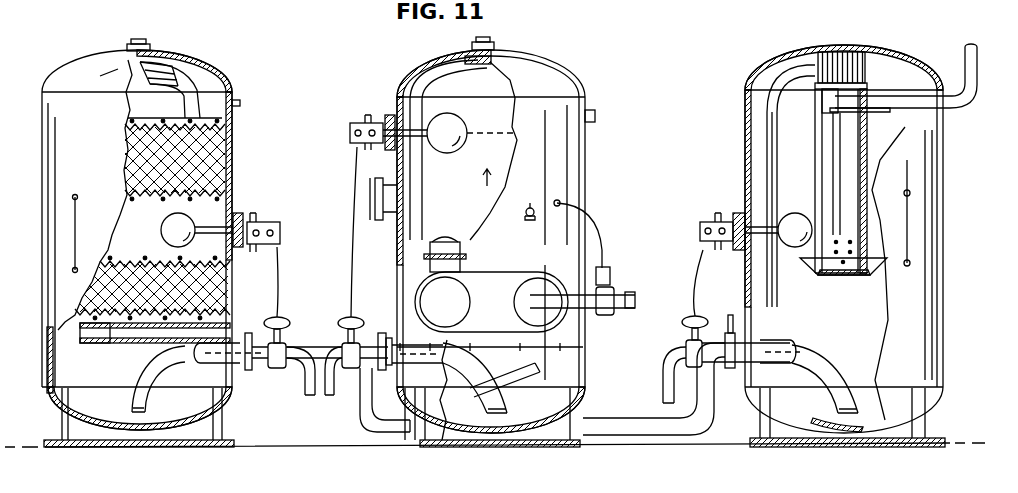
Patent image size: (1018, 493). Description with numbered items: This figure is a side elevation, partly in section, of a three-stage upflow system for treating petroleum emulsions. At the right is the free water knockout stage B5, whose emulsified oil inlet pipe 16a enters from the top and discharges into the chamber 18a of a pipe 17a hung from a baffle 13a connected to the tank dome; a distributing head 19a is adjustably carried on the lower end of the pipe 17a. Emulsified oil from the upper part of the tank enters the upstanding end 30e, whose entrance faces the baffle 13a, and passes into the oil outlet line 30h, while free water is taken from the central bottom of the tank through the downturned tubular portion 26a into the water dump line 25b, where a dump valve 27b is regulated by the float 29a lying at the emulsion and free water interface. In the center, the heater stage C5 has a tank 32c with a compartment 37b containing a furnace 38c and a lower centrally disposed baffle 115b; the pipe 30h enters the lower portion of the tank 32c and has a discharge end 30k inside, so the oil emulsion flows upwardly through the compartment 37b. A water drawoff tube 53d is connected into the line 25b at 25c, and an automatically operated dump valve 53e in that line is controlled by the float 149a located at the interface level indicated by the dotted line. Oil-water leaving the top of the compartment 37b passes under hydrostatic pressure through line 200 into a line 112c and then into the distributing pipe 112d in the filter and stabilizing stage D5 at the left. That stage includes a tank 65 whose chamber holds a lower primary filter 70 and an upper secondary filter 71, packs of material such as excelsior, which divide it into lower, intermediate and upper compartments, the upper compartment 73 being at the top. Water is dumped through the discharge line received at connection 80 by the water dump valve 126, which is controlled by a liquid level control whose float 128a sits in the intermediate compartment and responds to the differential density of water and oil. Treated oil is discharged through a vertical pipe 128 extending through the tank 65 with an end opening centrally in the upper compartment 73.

The filter and stabilizing stage D5 is at (236, 153).
The tank 65 is at (62, 176).
The vertical pipe 128 is at (182, 80).
The upper compartment 73 is at (175, 110).
The upper secondary filter 71 is at (126, 171).
The float 128a is at (161, 231).
The lower primary filter 70 is at (86, 290).
The distributing pipe 112d is at (147, 343).
The connection 80 is at (231, 384).
The water dump valve 126 is at (271, 316).
The line 112c is at (303, 343).
The dump valve 53e is at (348, 316).
The line 25c is at (370, 355).
The heater stage C5 is at (568, 167).
The compartment 37b is at (437, 60).
The tank 32c is at (543, 113).
The float 149a is at (450, 122).
The line 200 is at (412, 196).
The furnace 38c is at (522, 287).
The discharge end 30k is at (476, 345).
The baffle 115b is at (527, 365).
The water drawoff tube 53d is at (497, 393).
The oil outlet line 30h is at (634, 420).
The water dump line 25b is at (667, 362).
The free water knockout stage B5 is at (938, 147).
The baffle 13a is at (866, 72).
The emulsified oil inlet pipe 16a is at (960, 99).
The chamber 18a is at (858, 137).
The pipe 17a is at (820, 147).
The upstanding end 30e is at (766, 163).
The float 29a is at (794, 224).
The distributing head 19a is at (826, 277).
The dump valve 27b is at (698, 316).
The downturned tubular portion 26a is at (813, 355).